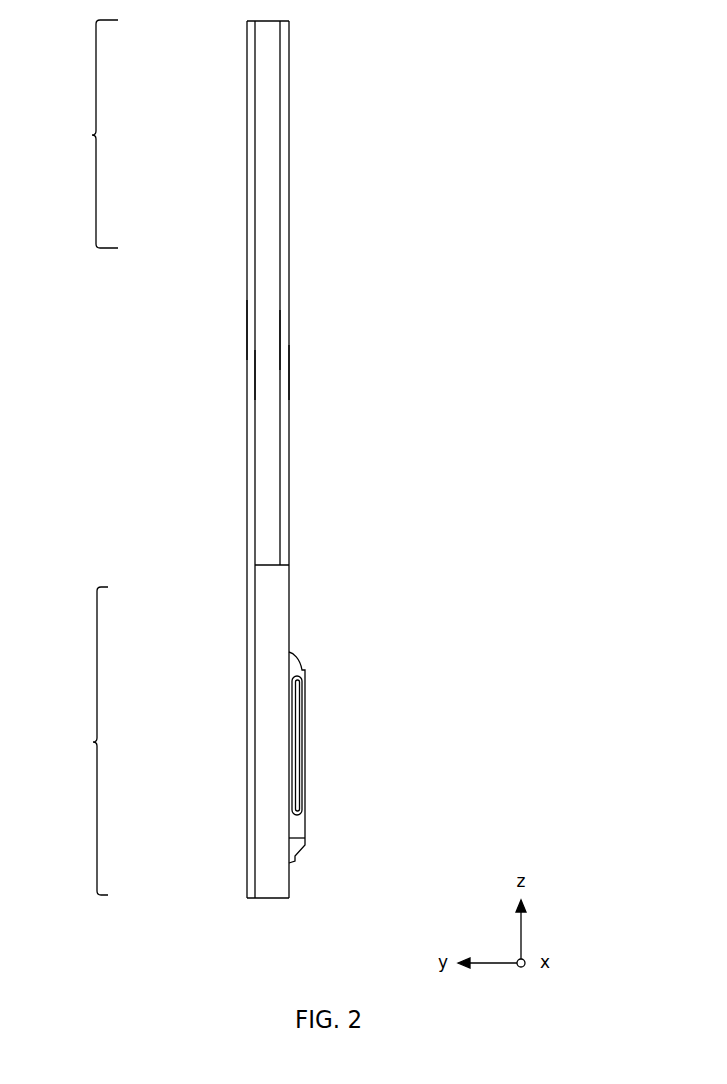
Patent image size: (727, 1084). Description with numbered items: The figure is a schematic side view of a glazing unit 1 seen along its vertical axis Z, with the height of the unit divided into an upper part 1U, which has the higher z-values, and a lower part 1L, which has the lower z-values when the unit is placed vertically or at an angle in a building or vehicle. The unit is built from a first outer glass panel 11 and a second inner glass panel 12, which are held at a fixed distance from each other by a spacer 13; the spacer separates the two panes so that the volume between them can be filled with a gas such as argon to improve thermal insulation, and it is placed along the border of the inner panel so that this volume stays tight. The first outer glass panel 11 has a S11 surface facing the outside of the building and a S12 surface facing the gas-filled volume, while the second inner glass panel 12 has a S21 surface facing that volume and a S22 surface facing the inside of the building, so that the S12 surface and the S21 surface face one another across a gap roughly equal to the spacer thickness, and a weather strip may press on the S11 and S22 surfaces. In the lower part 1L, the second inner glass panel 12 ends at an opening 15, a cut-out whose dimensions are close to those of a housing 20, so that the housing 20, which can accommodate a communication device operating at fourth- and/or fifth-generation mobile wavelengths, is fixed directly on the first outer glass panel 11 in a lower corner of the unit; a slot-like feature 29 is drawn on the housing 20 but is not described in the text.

The glazing unit 1 is at (547, 115).
The upper part 1U is at (92, 135).
The lower part 1L is at (93, 742).
The first outer glass panel 11 is at (255, 530).
The second inner glass panel 12 is at (285, 502).
The spacer 13 is at (268, 280).
The opening 15 is at (287, 567).
The housing 20 is at (348, 808).
The connector slot 29 is at (300, 722).
The S11 surface S11 is at (248, 332).
The S12 surface S12 is at (256, 380).
The S21 surface S21 is at (281, 342).
The S22 surface S22 is at (289, 375).